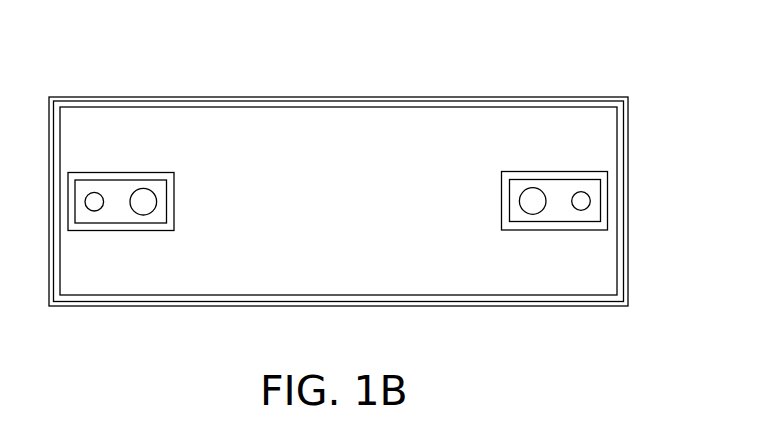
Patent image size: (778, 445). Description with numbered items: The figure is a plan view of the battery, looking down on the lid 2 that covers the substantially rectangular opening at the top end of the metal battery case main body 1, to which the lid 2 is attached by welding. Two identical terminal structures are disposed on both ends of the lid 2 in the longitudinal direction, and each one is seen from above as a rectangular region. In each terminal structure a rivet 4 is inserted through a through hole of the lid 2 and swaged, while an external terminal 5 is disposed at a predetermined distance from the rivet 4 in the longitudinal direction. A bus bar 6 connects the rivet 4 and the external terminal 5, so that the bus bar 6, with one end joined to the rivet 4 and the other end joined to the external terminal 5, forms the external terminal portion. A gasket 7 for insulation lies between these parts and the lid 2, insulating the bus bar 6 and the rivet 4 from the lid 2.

The battery case main body 1 is at (628, 155).
The lid 2 is at (341, 137).
The rivet 4 is at (143, 202).
The external terminal 5 is at (94, 204).
The bus bar 6 is at (119, 187).
The gasket 7 is at (133, 223).